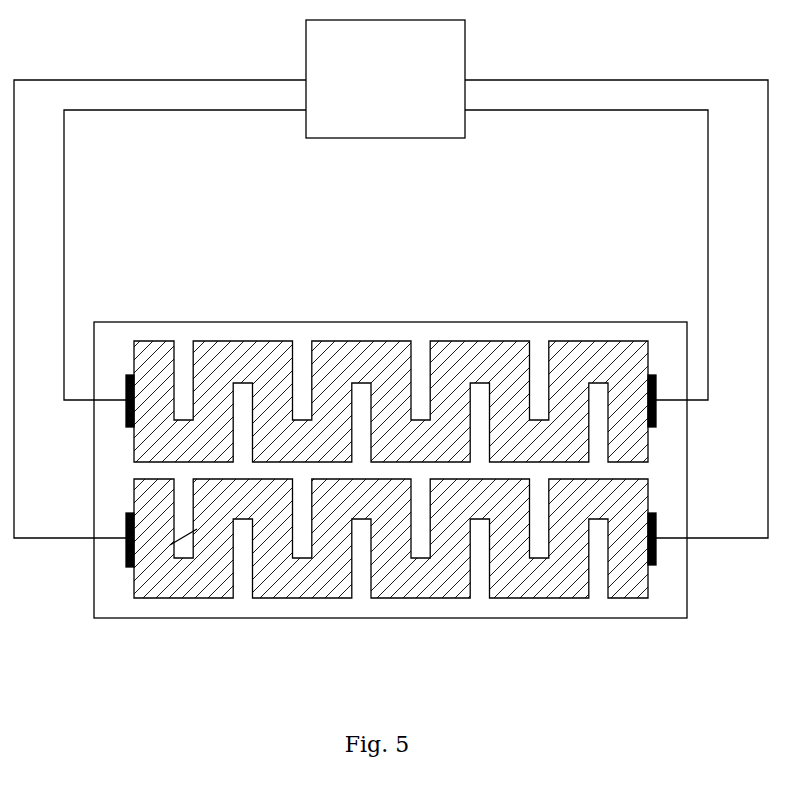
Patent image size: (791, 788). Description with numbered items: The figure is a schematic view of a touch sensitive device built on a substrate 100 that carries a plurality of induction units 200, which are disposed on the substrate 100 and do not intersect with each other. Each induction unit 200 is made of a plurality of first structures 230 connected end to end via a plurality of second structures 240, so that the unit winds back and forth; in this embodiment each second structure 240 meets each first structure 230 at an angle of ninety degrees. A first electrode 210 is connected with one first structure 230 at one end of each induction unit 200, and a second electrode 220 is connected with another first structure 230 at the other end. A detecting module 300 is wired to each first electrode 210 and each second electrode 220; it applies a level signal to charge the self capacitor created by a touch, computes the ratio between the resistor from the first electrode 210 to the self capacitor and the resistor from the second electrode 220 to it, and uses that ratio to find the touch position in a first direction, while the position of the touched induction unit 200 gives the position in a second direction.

The substrate 100 is at (292, 322).
The induction unit 200 is at (133, 567).
The first electrode 210 is at (126, 387).
The second electrode 220 is at (655, 387).
The first structure 230 is at (145, 347).
The second structure 240 is at (243, 485).
The detecting module 300 is at (385, 79).